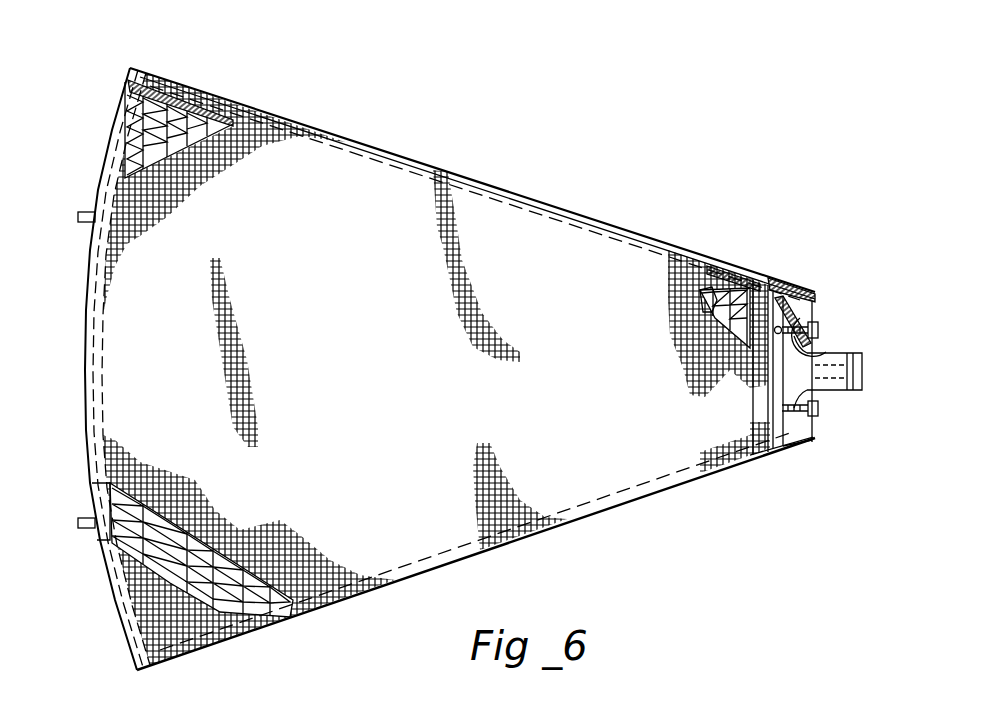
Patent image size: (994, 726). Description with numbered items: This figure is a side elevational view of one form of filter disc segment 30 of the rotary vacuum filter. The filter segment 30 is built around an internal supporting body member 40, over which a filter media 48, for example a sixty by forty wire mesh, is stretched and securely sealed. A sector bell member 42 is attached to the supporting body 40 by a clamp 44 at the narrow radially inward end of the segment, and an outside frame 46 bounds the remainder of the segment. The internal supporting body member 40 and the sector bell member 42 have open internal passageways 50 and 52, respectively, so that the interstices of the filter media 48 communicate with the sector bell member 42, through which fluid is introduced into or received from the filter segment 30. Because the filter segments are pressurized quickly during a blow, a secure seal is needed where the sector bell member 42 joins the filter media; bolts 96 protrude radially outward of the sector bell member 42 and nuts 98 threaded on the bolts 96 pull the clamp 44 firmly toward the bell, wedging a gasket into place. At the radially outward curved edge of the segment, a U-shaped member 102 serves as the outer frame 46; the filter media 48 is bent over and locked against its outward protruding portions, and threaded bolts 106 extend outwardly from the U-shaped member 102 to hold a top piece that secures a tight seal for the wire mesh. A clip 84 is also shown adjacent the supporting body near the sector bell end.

The filter disc segment 30 is at (613, 508).
The internal supporting body member 40 is at (187, 107).
The sector bell member 42 is at (833, 353).
The clamp 44 is at (765, 296).
The outside frame 46 is at (528, 198).
The filter media 48 is at (271, 113).
The open internal passageway 50 is at (745, 296).
The open internal passageway 52 is at (817, 370).
The clip 84 is at (682, 252).
The bolts 96 is at (820, 337).
The nuts 98 is at (818, 407).
The U-shaped member 102 is at (120, 128).
The threaded bolts 106 is at (87, 212).